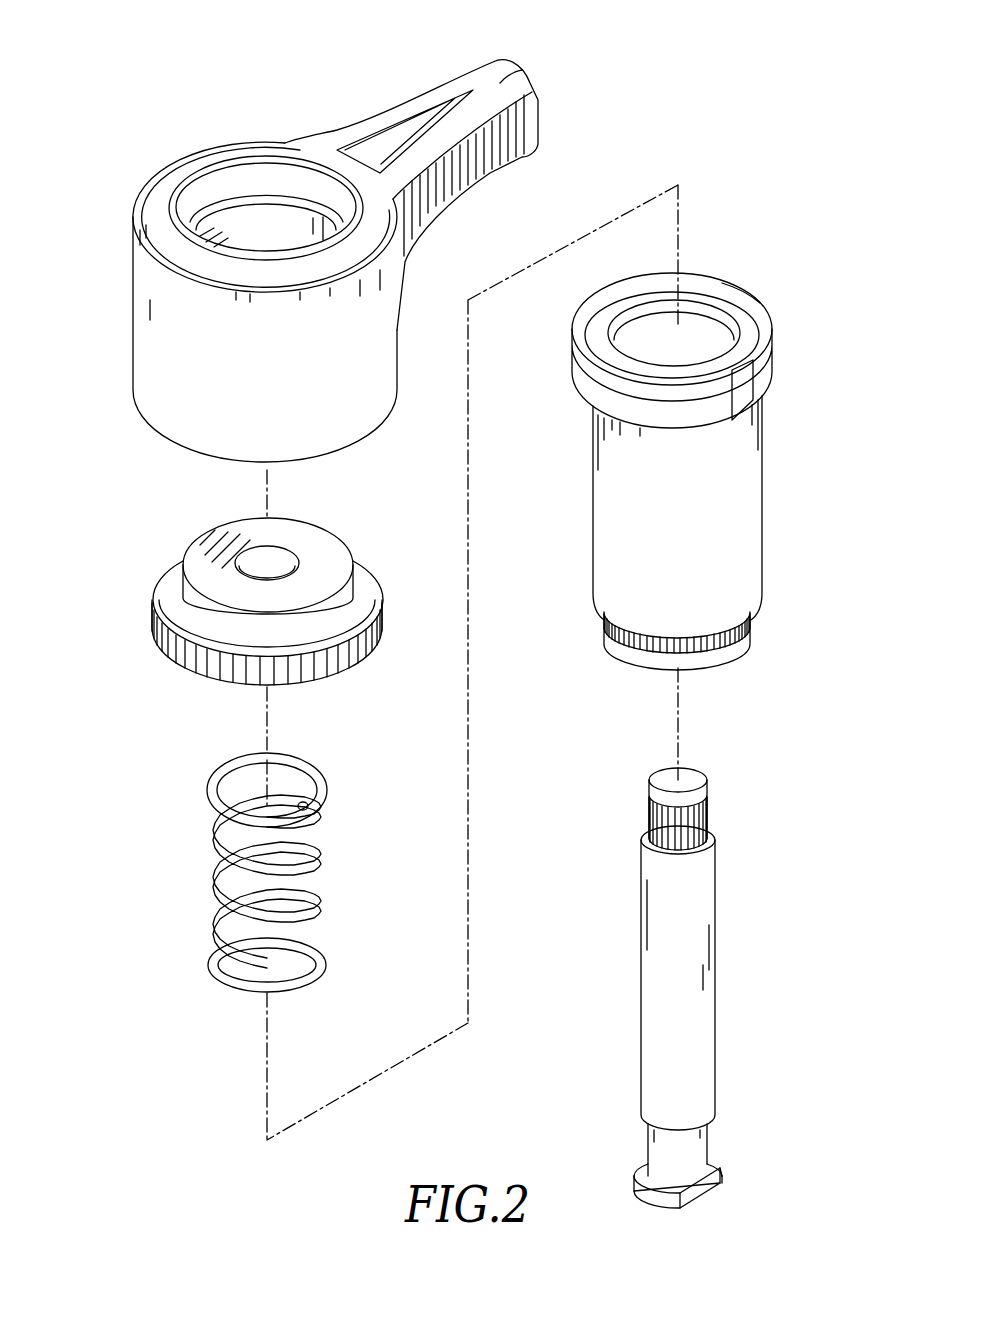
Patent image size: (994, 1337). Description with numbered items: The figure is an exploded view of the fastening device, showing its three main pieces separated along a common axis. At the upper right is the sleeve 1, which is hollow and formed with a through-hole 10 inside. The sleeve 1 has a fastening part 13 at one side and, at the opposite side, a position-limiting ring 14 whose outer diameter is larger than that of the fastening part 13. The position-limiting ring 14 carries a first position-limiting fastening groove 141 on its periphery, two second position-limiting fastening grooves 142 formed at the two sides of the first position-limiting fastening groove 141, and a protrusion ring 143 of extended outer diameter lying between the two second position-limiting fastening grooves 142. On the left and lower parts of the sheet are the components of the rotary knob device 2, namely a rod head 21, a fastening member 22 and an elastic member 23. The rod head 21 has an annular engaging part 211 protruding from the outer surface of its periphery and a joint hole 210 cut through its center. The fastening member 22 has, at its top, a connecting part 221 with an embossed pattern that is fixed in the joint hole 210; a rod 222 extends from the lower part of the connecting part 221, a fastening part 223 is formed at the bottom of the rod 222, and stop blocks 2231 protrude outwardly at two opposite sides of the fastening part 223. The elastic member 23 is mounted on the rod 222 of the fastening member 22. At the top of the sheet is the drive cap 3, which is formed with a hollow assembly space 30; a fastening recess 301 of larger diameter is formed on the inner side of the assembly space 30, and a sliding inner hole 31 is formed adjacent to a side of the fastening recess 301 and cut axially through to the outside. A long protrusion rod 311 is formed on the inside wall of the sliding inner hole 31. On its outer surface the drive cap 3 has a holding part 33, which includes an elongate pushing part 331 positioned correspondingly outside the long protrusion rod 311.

The sleeve 1 is at (678, 465).
The through-hole 10 is at (650, 318).
The fastening part 13 is at (623, 638).
The position-limiting ring 14 is at (678, 344).
The first position-limiting fastening groove 141 is at (742, 292).
The second position-limiting fastening grooves 142 is at (746, 382).
The protrusion ring 143 is at (580, 340).
The rotary knob device 2 is at (242, 625).
The rod head 21 is at (279, 562).
The joint hole 210 is at (288, 562).
The annular engaging part 211 is at (175, 593).
The fastening member 22 is at (625, 988).
The connecting part 221 is at (657, 825).
The rod 222 is at (665, 950).
The fastening part 223 is at (580, 1166).
The stop blocks 2231 is at (640, 1173).
The elastic member 23 is at (217, 828).
The drive cap 3 is at (384, 231).
The assembly space 30 is at (253, 169).
The fastening recess 301 is at (222, 205).
The sliding inner hole 31 is at (307, 80).
The long protrusion rod 311 is at (327, 213).
The holding part 33 is at (483, 165).
The pushing part 331 is at (500, 83).